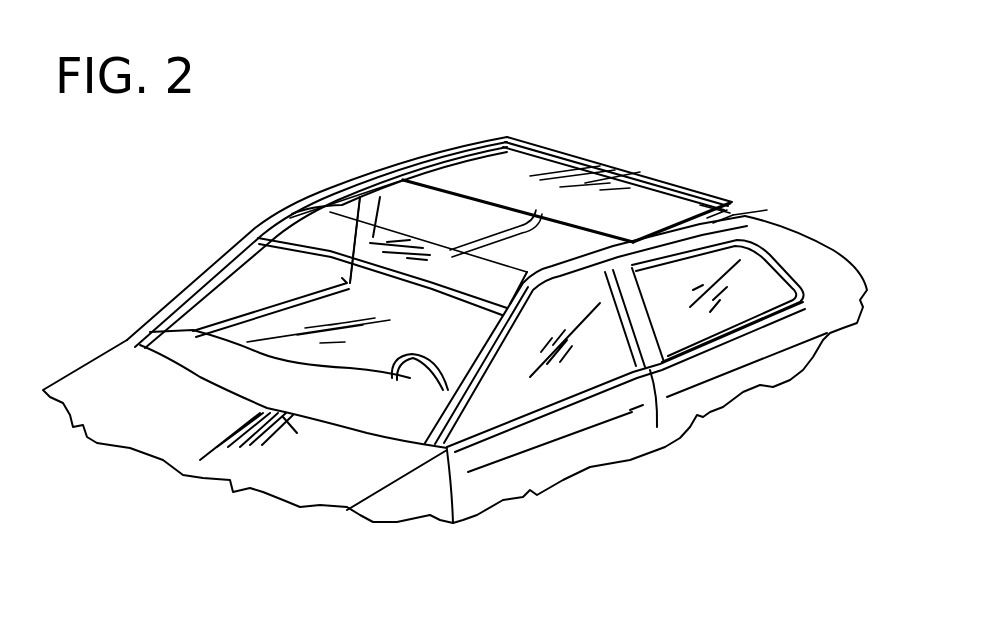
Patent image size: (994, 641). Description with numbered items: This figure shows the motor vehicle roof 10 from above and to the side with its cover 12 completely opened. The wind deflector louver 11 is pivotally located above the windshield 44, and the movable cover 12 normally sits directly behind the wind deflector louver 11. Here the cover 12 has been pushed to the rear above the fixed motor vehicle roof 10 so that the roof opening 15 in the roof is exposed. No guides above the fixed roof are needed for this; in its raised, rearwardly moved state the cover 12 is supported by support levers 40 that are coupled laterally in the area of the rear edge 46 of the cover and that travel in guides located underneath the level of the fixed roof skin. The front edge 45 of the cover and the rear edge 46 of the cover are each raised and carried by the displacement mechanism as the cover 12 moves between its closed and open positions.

The motor vehicle roof 10 is at (559, 137).
The wind deflector louver 11 is at (308, 223).
The movable cover 12 is at (515, 162).
The roof opening 15 is at (410, 208).
The support levers 40 is at (737, 212).
The windshield 44 is at (247, 330).
The front edge of the cover 45 is at (601, 225).
The rear edge of the cover 46 is at (688, 186).